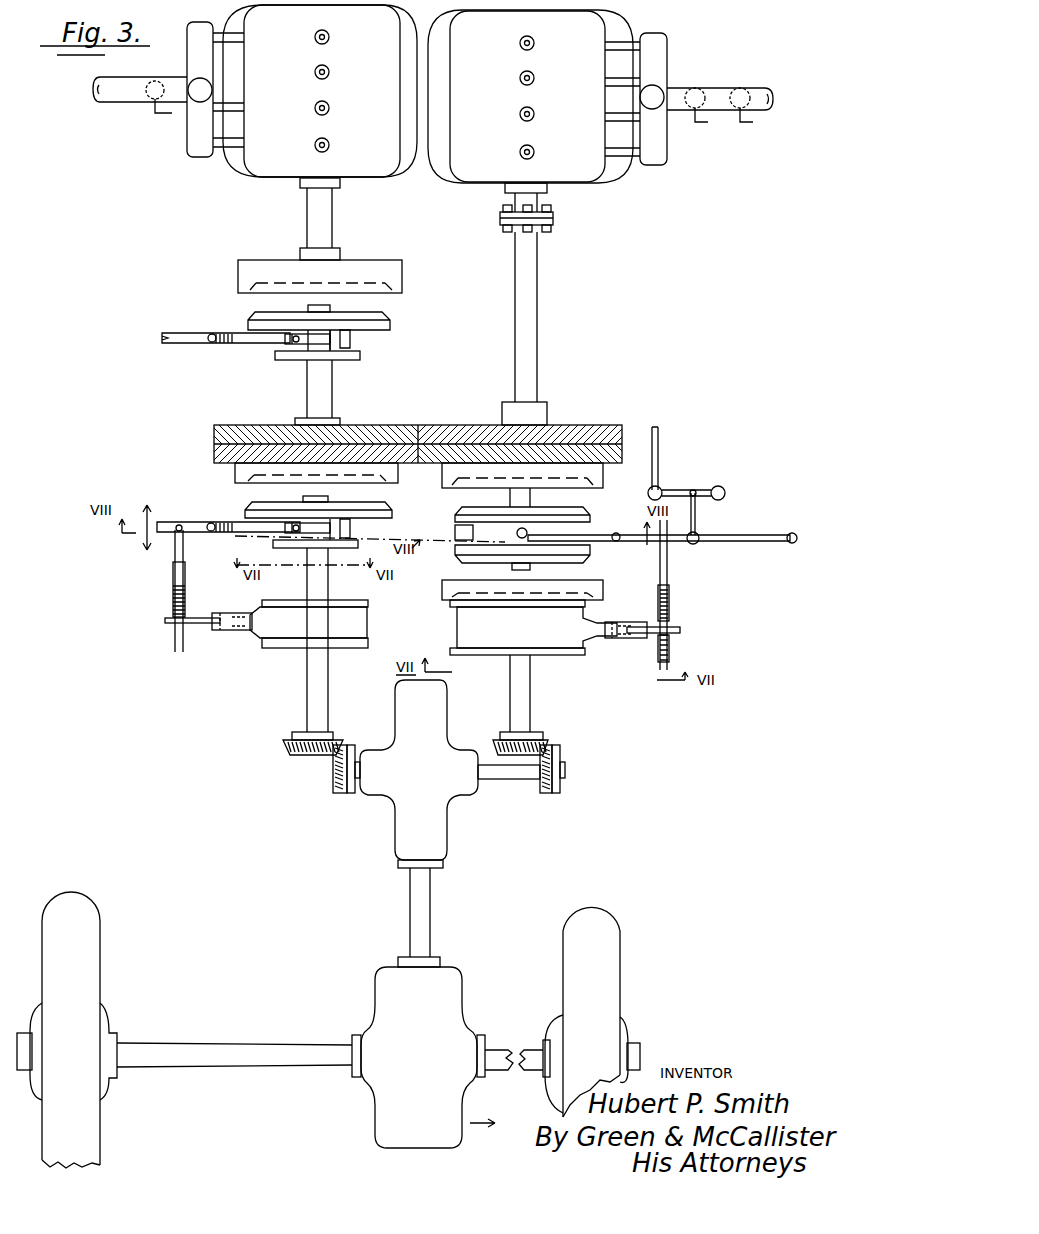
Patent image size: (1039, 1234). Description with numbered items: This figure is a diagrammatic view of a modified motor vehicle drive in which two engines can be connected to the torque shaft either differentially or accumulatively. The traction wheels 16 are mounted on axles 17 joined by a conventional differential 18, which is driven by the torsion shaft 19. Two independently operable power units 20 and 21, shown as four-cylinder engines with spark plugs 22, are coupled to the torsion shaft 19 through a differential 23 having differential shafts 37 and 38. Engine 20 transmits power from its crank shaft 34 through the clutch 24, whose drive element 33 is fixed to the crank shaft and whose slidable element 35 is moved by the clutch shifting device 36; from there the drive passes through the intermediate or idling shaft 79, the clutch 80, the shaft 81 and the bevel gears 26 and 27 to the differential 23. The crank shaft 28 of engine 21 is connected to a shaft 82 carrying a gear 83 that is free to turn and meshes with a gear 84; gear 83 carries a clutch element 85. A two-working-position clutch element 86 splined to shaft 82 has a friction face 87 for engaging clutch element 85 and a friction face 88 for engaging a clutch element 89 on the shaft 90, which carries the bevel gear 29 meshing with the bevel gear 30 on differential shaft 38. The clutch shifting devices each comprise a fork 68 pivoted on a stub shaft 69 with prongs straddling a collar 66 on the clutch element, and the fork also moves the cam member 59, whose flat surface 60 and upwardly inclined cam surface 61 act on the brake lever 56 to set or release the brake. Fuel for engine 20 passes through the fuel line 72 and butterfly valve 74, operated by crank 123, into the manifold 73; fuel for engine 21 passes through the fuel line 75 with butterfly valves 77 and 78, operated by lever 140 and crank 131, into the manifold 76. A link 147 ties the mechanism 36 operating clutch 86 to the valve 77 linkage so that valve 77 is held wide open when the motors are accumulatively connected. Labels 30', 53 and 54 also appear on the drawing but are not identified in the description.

The traction wheels 16 is at (88, 928).
The axles 17 is at (259, 1050).
The differential 18 is at (435, 1055).
The torsion shaft 19 is at (430, 905).
The power unit 20 is at (293, 150).
The power unit 21 is at (492, 150).
The spark plugs 22 is at (329, 42).
The differential 23 is at (443, 790).
The clutch 24 is at (200, 310).
The bevel gear 26 is at (292, 745).
The bevel gear 27 is at (343, 793).
The crank shaft 28 is at (537, 200).
The bevel gear 29 is at (540, 740).
The bevel gear 30 is at (571, 784).
The bevel gear 30' is at (485, 728).
The drive element 33 is at (395, 278).
The crank shaft 34 is at (328, 214).
The slidable element 35 is at (392, 318).
The clutch shifting device 36 is at (230, 356).
The differential shaft 37 is at (358, 778).
The differential shaft 38 is at (510, 779).
The clutch plate 53 is at (338, 603).
The clutch drum 54 is at (355, 620).
The lever 56 is at (220, 628).
The cam member 59 is at (185, 585).
The flat surface 60 is at (175, 633).
The upwardly inclined cam surface 61 is at (173, 600).
The collar 66 is at (350, 338).
The fork 68 is at (165, 335).
The stub shaft 69 is at (225, 328).
The fuel line 72 is at (117, 98).
The manifold 73 is at (203, 157).
The butterfly valve 74 is at (156, 80).
The fuel line 75 is at (760, 108).
The manifold 76 is at (660, 62).
The butterfly valve 77 is at (701, 91).
The butterfly valve 78 is at (746, 91).
The idling shaft 79 is at (330, 388).
The clutch 80 is at (228, 507).
The shaft 81 is at (315, 575).
The shaft 82 is at (537, 250).
The gear 83 is at (580, 432).
The gear 84 is at (214, 445).
The clutch element 85 is at (450, 480).
The clutch element 86 is at (460, 540).
The friction face 87 is at (463, 510).
The friction face 88 is at (590, 560).
The clutch element 89 is at (450, 588).
The shaft 90 is at (535, 680).
The crank 123 is at (163, 115).
The crank 131 is at (748, 125).
The lever 140 is at (703, 125).
The link 147 is at (658, 445).